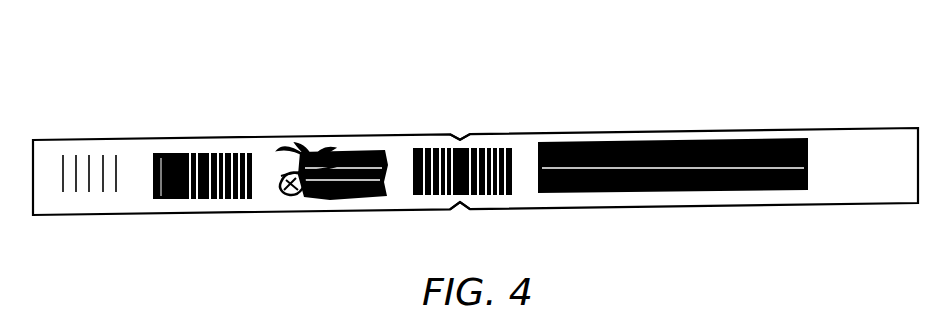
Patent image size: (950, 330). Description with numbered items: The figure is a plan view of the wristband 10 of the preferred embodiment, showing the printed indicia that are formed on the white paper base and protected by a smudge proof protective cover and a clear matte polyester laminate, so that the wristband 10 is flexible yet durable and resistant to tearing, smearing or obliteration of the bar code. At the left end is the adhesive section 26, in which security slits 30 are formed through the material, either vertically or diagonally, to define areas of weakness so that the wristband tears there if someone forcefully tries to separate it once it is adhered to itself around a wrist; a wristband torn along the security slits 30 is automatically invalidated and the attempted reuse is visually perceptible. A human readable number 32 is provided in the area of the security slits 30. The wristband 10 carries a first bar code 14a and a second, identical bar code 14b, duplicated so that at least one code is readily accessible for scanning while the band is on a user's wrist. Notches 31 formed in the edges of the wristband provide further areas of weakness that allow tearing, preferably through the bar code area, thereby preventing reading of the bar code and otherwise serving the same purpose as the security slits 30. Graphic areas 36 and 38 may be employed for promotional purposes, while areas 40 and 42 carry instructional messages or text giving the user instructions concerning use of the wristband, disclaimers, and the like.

The wristband 10 is at (602, 66).
The first bar code 14a is at (205, 153).
The second bar code 14b is at (483, 151).
The adhesive section 26 is at (103, 175).
The security slits 30 is at (118, 158).
The notches 31 is at (461, 137).
The human readable number 32 is at (48, 186).
The graphic area 36 is at (333, 150).
The graphic area 38 is at (695, 142).
The instructional text area 40 is at (118, 205).
The instructional text area 42 is at (840, 148).